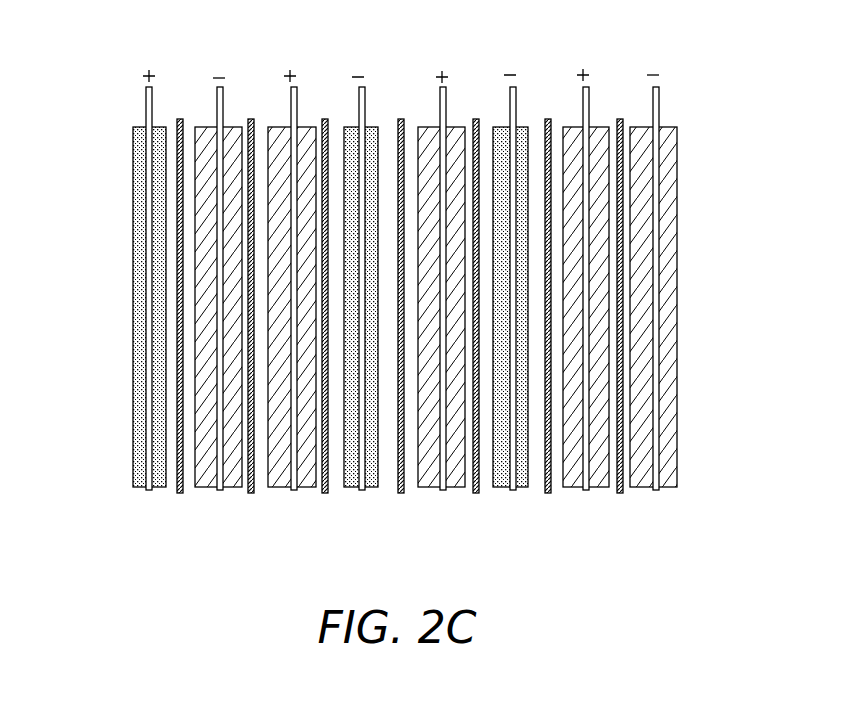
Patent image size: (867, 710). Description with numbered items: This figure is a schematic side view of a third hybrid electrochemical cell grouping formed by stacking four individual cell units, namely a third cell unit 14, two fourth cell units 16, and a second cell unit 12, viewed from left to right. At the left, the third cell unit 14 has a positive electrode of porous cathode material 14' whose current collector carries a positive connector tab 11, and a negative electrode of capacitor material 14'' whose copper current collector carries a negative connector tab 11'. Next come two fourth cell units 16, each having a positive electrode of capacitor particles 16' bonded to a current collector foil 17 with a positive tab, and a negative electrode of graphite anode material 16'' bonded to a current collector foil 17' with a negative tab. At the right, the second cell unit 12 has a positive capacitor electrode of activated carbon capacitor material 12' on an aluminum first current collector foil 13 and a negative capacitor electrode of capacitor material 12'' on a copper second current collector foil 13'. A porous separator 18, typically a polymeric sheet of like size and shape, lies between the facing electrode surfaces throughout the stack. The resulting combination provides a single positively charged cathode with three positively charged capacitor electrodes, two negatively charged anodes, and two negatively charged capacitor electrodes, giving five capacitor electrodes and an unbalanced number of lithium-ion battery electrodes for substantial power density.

The first current collector 11 is at (135, 268).
The second current collector 11' is at (202, 267).
The second cell unit 12 is at (621, 331).
The capacitor material 12' is at (648, 307).
The capacitor material 12'' is at (689, 307).
The first current collector foil 13 is at (570, 266).
The second current collector foil 13' is at (639, 266).
The third cell unit 14 is at (187, 331).
The cathode material 14' is at (122, 307).
The capacitor material 14'' is at (159, 307).
The fourth cell unit 16 is at (400, 331).
The capacitor particles 16' is at (324, 324).
The anode material 16'' is at (396, 324).
The current collector foil 17 is at (347, 271).
The current collector foil 17' is at (419, 270).
The porous separator 18 is at (180, 118).